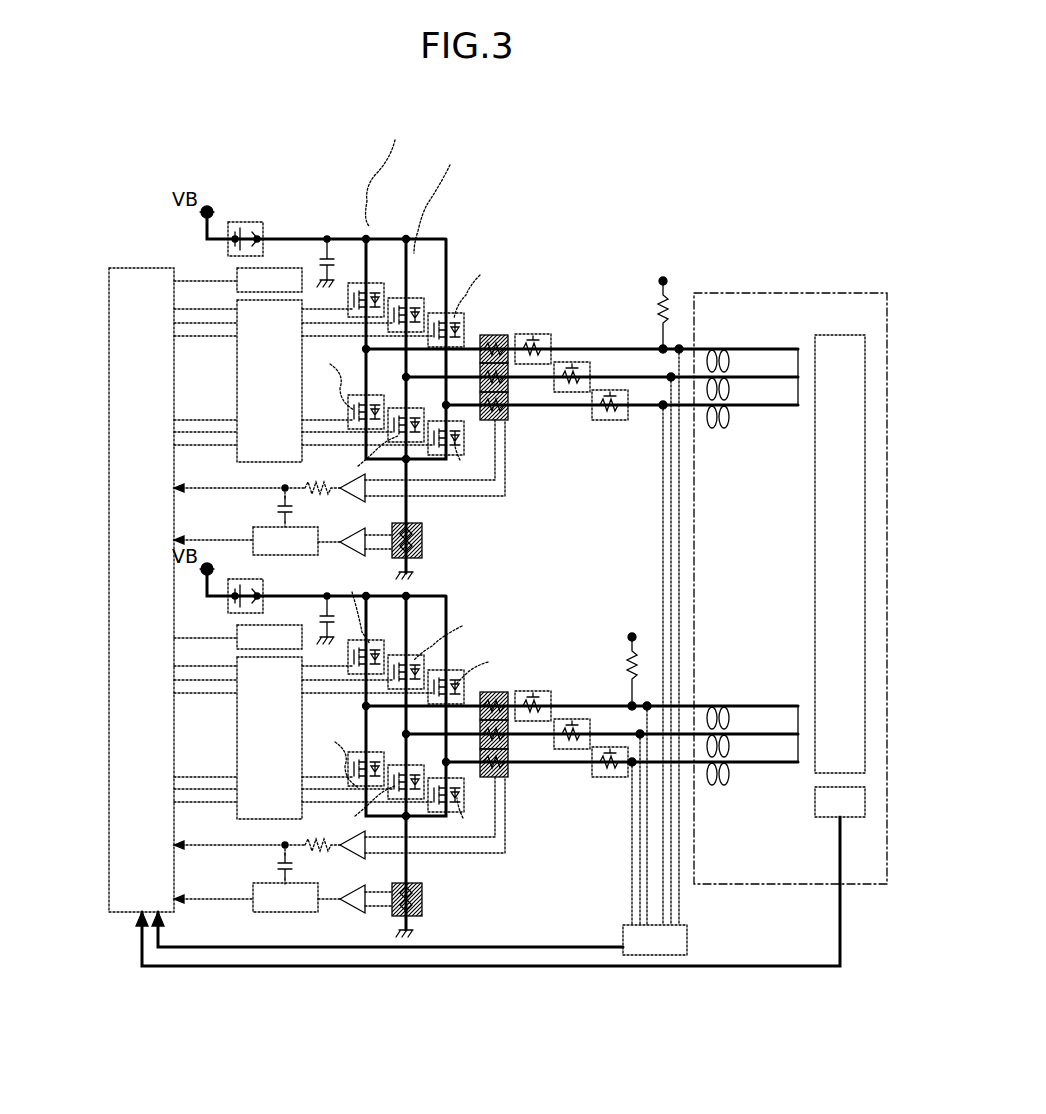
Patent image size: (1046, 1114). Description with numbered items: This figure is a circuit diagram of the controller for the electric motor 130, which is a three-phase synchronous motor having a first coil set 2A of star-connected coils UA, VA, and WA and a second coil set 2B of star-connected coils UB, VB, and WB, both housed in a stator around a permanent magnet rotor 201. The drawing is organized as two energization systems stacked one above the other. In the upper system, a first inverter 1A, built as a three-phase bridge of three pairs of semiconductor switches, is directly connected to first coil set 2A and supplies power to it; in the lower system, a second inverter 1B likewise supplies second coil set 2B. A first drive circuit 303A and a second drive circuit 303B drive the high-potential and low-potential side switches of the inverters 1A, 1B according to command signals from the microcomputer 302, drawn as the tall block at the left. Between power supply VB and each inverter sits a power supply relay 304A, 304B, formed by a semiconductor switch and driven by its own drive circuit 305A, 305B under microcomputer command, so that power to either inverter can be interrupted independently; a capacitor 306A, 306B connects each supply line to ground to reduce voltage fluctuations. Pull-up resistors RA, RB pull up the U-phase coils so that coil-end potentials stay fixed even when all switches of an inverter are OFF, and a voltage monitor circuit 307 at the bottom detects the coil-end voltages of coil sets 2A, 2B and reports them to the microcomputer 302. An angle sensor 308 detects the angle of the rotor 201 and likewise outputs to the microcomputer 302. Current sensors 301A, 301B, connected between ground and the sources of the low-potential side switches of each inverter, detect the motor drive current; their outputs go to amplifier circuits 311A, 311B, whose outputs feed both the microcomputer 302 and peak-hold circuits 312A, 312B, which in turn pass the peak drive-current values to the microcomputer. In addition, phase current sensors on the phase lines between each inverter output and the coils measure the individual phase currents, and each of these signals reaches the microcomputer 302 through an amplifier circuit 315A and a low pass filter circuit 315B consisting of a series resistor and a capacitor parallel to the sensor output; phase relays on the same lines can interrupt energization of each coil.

The microcomputer 302 is at (109, 312).
The first drive circuit 303A is at (237, 382).
The second drive circuit 303B is at (237, 739).
The power supply relay 304A is at (245, 220).
The power supply relay 304B is at (237, 587).
The drive circuit 305A is at (237, 270).
The drive circuit 305B is at (237, 630).
The capacitor 306A is at (326, 238).
The capacitor 306B is at (318, 596).
The first inverter 1A is at (530, 225).
The second inverter 1B is at (497, 604).
The first coil set 2A is at (737, 434).
The second coil set 2B is at (745, 666).
The pull-up resistor RA is at (647, 300).
The pull-up resistor RB is at (634, 655).
The amplifier circuit 315A is at (384, 480).
The low pass filter circuit 315B is at (302, 478).
The amplifier circuit 311A is at (343, 541).
The amplifier circuit 311B is at (332, 896).
The peak-hold circuit 312A is at (254, 536).
The peak-hold circuit 312B is at (253, 884).
The current sensor 301A is at (423, 543).
The current sensor 301B is at (433, 898).
The electric motor 130 is at (808, 293).
The permanent magnet rotor 201 is at (866, 359).
The voltage monitor circuit 307 is at (710, 942).
The angle sensor 308 is at (865, 802).